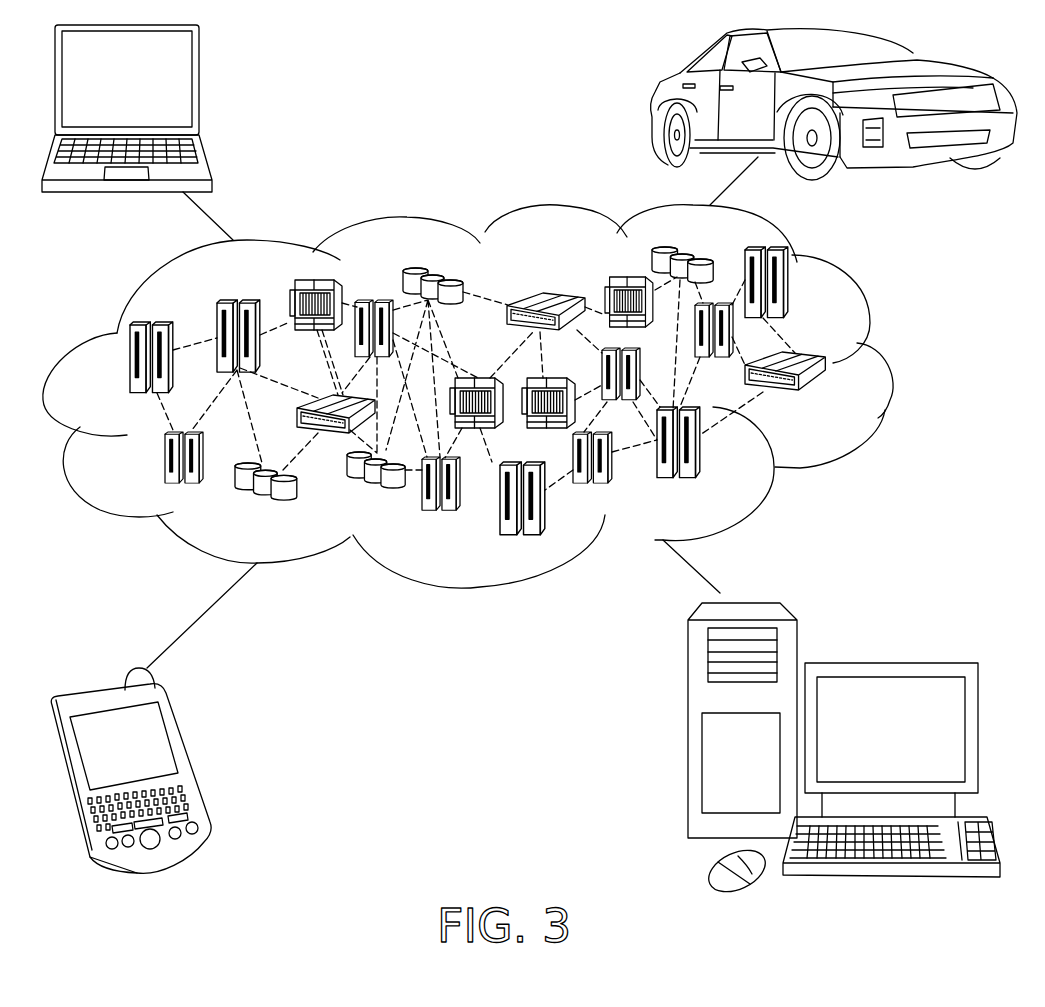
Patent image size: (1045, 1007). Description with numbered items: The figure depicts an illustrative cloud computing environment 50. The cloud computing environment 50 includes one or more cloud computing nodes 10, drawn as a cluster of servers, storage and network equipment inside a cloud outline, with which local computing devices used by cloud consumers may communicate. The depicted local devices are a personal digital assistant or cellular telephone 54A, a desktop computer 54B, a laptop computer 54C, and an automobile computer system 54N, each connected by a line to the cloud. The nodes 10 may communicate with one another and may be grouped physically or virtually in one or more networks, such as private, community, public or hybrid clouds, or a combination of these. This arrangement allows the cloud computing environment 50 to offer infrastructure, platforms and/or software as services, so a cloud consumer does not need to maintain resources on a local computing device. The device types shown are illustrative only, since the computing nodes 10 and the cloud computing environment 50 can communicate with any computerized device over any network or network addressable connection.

The laptop computer 54C is at (202, 88).
The automobile computer system 54N is at (661, 106).
The cloud computing environment 50 is at (499, 436).
The cloud computing node 10 is at (833, 401).
The personal digital assistant (PDA) or cellular telephone 54A is at (193, 760).
The desktop computer 54B is at (890, 665).